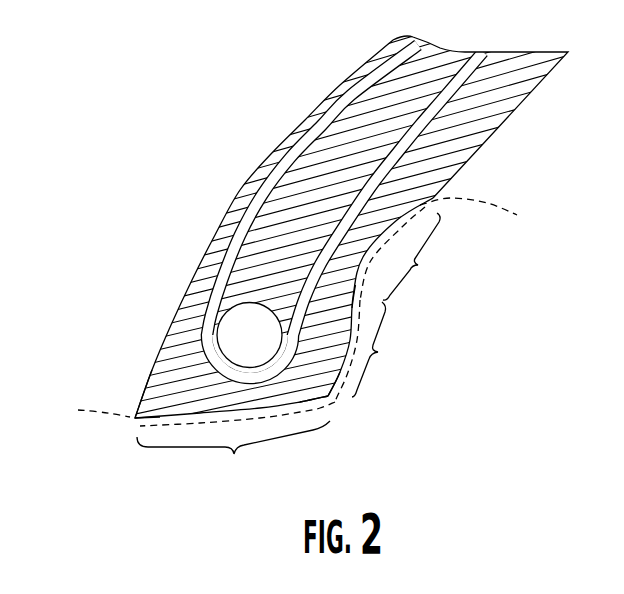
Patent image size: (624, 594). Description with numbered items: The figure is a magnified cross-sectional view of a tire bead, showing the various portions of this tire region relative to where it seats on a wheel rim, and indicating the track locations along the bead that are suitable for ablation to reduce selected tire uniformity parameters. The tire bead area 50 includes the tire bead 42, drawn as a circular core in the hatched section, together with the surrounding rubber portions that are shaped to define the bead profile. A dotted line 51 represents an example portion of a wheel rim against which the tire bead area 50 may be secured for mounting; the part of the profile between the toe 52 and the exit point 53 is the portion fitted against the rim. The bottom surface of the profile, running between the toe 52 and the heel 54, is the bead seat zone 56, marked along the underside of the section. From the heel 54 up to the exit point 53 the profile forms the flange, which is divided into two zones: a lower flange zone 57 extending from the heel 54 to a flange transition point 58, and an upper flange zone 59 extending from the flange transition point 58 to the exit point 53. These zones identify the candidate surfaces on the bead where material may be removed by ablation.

The tire bead area 50 is at (148, 144).
The tire bead 42 is at (240, 328).
The dotted line 51 is at (98, 410).
The toe 52 is at (130, 419).
The exit point 53 is at (440, 202).
The heel 54 is at (330, 398).
The bead seat zone 56 is at (236, 447).
The lower flange zone 57 is at (374, 351).
The flange transition point 58 is at (355, 298).
The upper flange zone 59 is at (405, 253).